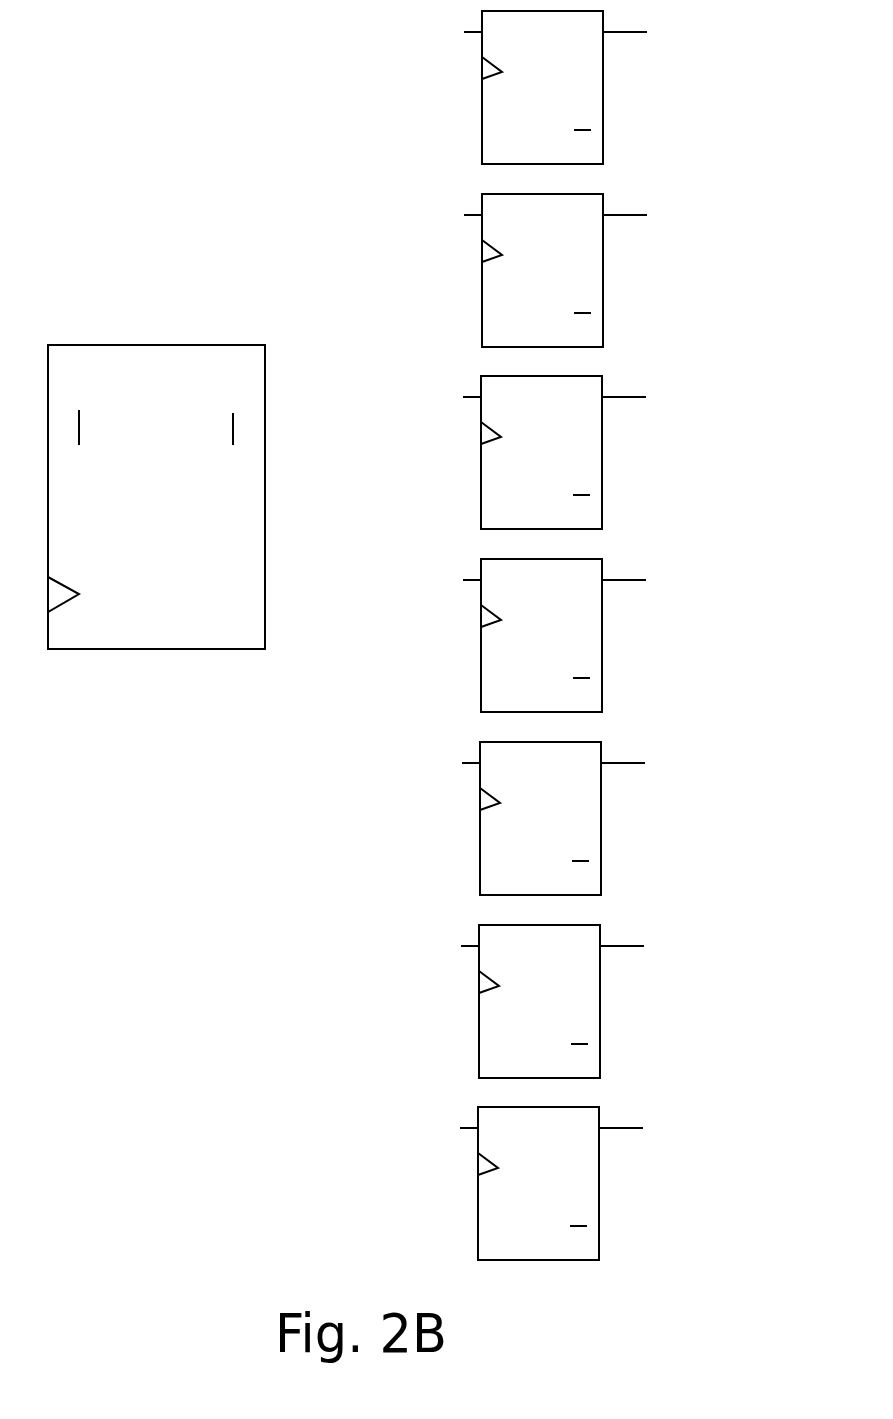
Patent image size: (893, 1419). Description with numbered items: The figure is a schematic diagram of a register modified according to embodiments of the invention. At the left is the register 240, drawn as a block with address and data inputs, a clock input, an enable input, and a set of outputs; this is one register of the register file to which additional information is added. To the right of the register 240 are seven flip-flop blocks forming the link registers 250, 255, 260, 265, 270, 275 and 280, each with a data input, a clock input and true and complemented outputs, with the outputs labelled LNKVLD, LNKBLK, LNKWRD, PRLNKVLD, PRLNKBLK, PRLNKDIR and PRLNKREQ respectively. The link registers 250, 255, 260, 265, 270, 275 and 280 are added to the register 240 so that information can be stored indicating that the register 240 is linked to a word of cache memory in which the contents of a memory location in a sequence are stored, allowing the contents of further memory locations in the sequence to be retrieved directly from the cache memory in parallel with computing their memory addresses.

The register 240 is at (265, 593).
The link register 250 is at (603, 103).
The link register 255 is at (603, 286).
The link register 260 is at (602, 468).
The link register 265 is at (602, 651).
The link register 270 is at (601, 834).
The link register 275 is at (600, 1017).
The link register 280 is at (599, 1199).